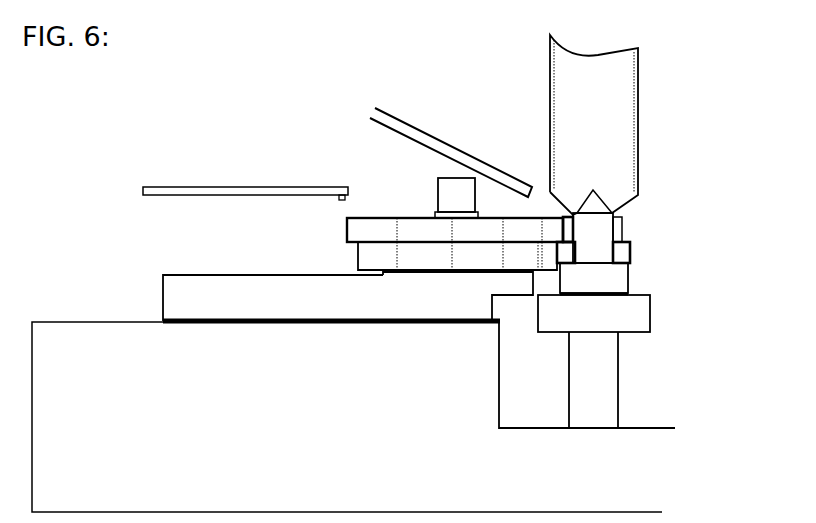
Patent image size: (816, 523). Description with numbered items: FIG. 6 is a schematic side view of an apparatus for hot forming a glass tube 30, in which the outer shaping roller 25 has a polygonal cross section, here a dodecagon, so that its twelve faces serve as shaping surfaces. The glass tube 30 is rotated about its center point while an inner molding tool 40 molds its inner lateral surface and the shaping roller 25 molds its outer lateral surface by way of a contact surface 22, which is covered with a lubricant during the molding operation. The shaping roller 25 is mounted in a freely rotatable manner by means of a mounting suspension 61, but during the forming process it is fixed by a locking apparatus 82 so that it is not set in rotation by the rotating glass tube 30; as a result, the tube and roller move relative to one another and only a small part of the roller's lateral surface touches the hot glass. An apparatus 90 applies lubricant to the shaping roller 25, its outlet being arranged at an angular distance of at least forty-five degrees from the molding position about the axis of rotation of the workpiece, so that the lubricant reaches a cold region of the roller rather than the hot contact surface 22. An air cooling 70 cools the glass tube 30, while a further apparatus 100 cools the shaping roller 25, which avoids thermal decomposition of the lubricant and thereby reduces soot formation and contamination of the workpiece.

The contact surface 22 is at (568, 233).
The shaping roller 25 is at (383, 255).
The glass tube 30 is at (607, 132).
The inner molding tool 40 is at (593, 245).
The mounting suspension 61 is at (392, 312).
The air cooling 70 is at (447, 148).
The locking apparatus 82 is at (452, 192).
The lubricant application apparatus 90 is at (273, 188).
The roller cooling apparatus 100 is at (477, 283).